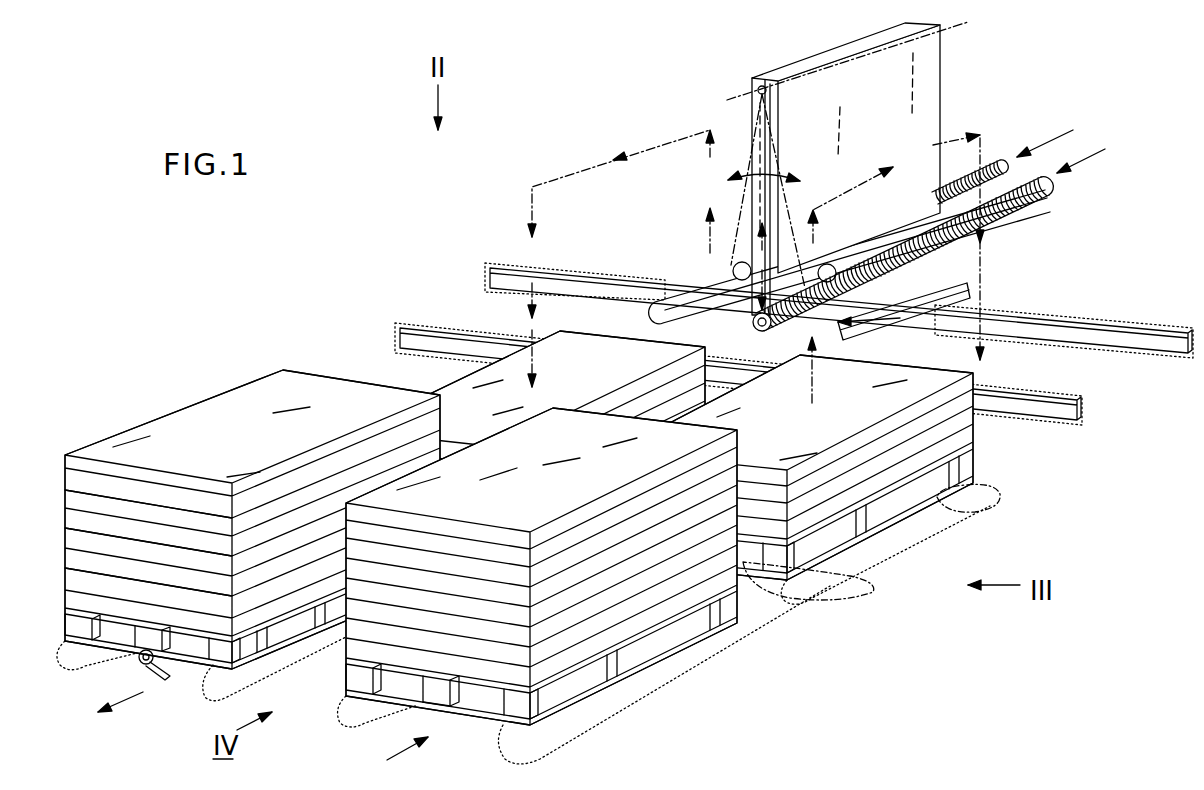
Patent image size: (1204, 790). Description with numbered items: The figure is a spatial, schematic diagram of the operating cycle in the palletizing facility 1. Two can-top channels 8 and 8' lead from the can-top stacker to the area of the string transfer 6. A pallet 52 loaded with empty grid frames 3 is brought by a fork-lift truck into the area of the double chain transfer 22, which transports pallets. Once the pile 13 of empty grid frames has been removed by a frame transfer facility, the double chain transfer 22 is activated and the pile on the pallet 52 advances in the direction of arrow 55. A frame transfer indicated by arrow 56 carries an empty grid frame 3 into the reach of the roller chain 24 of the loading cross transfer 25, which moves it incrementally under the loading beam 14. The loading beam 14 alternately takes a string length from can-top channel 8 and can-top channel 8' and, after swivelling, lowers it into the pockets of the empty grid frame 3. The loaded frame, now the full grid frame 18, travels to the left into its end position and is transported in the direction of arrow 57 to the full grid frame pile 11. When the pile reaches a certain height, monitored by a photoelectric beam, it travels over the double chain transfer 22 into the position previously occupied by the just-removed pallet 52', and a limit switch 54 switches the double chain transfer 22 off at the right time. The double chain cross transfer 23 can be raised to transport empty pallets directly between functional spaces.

The palletizing facility 1 is at (447, 283).
The empty grid frame 3 is at (864, 409).
The string transfer 6 is at (894, 304).
The can-top channel 8 is at (975, 160).
The can-top channel 8' is at (913, 254).
The full grid frame pile 11 is at (581, 386).
The pile of empty grid frames 13 is at (880, 477).
The loading beam 14 is at (932, 77).
The full grid frame 18 is at (97, 485).
The double chain transfer 22 is at (297, 658).
The double chain cross transfer 23 is at (862, 607).
The roller chain 24 is at (1130, 350).
The loading cross transfer 25 is at (738, 374).
The pallet 52 is at (444, 728).
The pallet 52' is at (172, 677).
The limit switch 54 is at (137, 665).
The arrow 55 is at (391, 763).
The arrow 56 is at (893, 279).
The arrow 57 is at (621, 258).